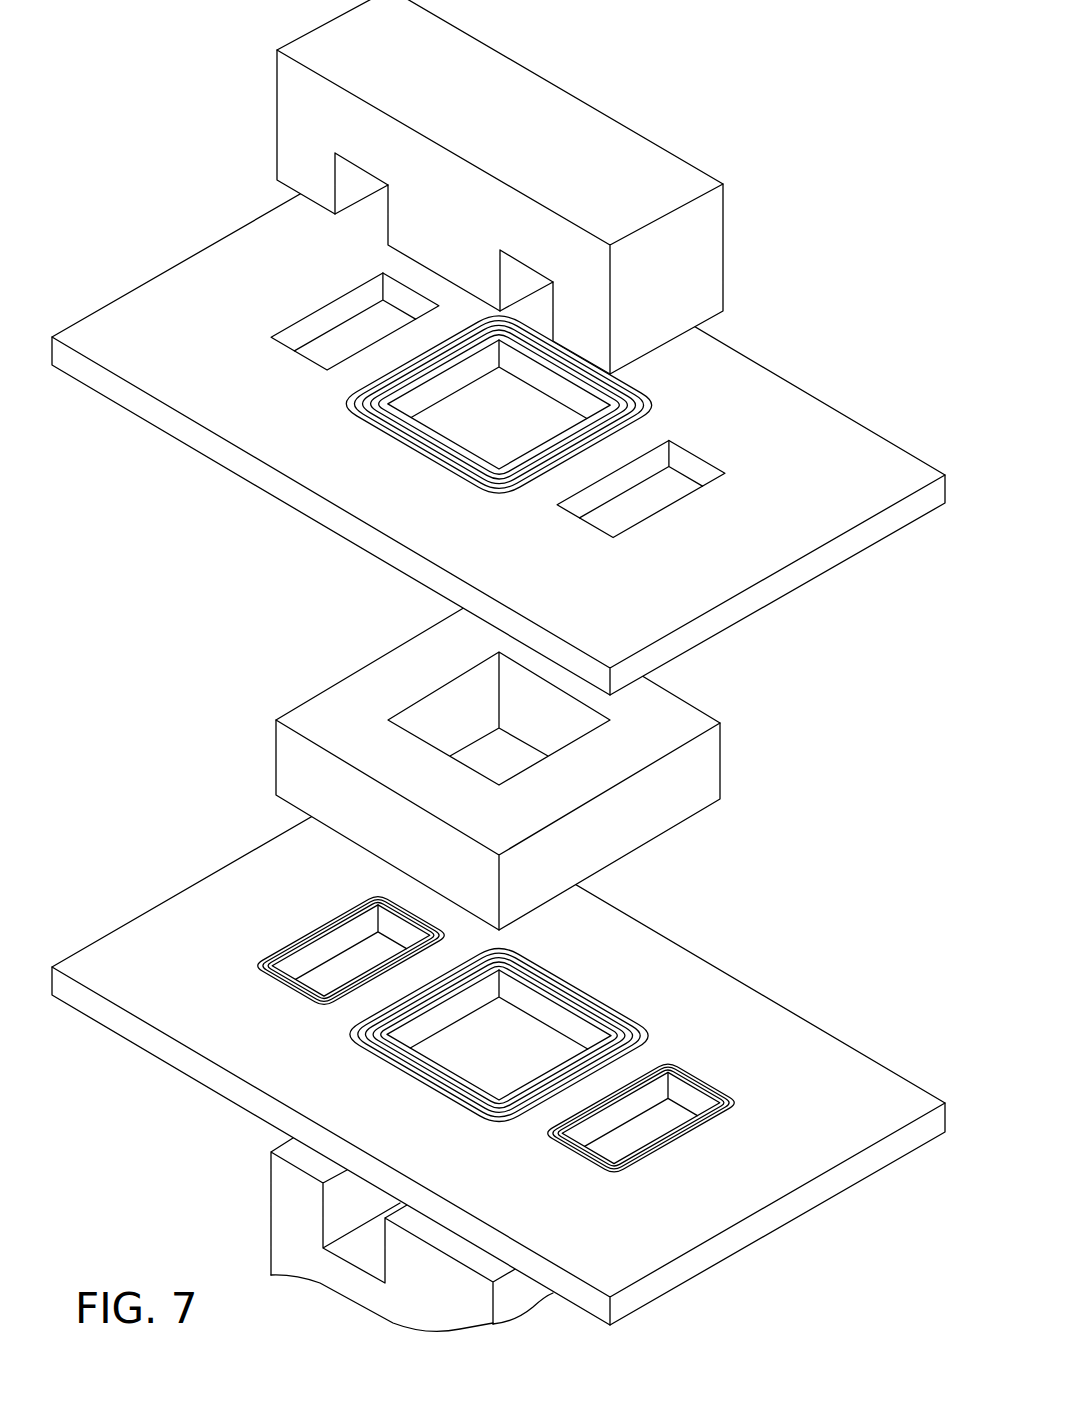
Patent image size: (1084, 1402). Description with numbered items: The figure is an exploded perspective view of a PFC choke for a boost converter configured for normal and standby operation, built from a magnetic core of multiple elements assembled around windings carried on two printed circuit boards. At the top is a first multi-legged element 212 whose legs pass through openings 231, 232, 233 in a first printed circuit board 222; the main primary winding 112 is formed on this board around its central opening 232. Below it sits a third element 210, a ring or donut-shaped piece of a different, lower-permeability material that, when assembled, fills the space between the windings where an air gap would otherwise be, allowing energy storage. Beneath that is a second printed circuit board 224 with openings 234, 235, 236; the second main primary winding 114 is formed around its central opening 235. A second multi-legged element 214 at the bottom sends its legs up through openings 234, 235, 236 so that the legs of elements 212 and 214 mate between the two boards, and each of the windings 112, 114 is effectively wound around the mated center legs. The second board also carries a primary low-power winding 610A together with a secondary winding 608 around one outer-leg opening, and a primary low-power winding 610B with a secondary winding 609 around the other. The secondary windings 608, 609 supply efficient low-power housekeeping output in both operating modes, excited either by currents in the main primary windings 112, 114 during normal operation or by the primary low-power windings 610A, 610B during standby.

The first multi-legged element 212 is at (647, 148).
The first printed circuit board 222 is at (765, 375).
The opening in first circuit board 231 is at (347, 333).
The central opening of first circuit board 232 is at (525, 427).
The opening in first circuit board 233 is at (668, 490).
The main primary winding L1 112 is at (483, 493).
The third element 210 is at (722, 774).
The second printed circuit board 224 is at (765, 1008).
The opening in second circuit board 234 is at (392, 967).
The central opening of second circuit board 235 is at (528, 1064).
The opening in second circuit board 236 is at (681, 1132).
The main primary winding L2 114 is at (438, 1097).
The primary low-power winding L3A 610A is at (338, 951).
The secondary winding L4 608 is at (325, 922).
The primary low-power winding L3B 610B is at (672, 1127).
The secondary winding L5 609 is at (698, 1133).
The second multi-legged element 214 is at (287, 1190).